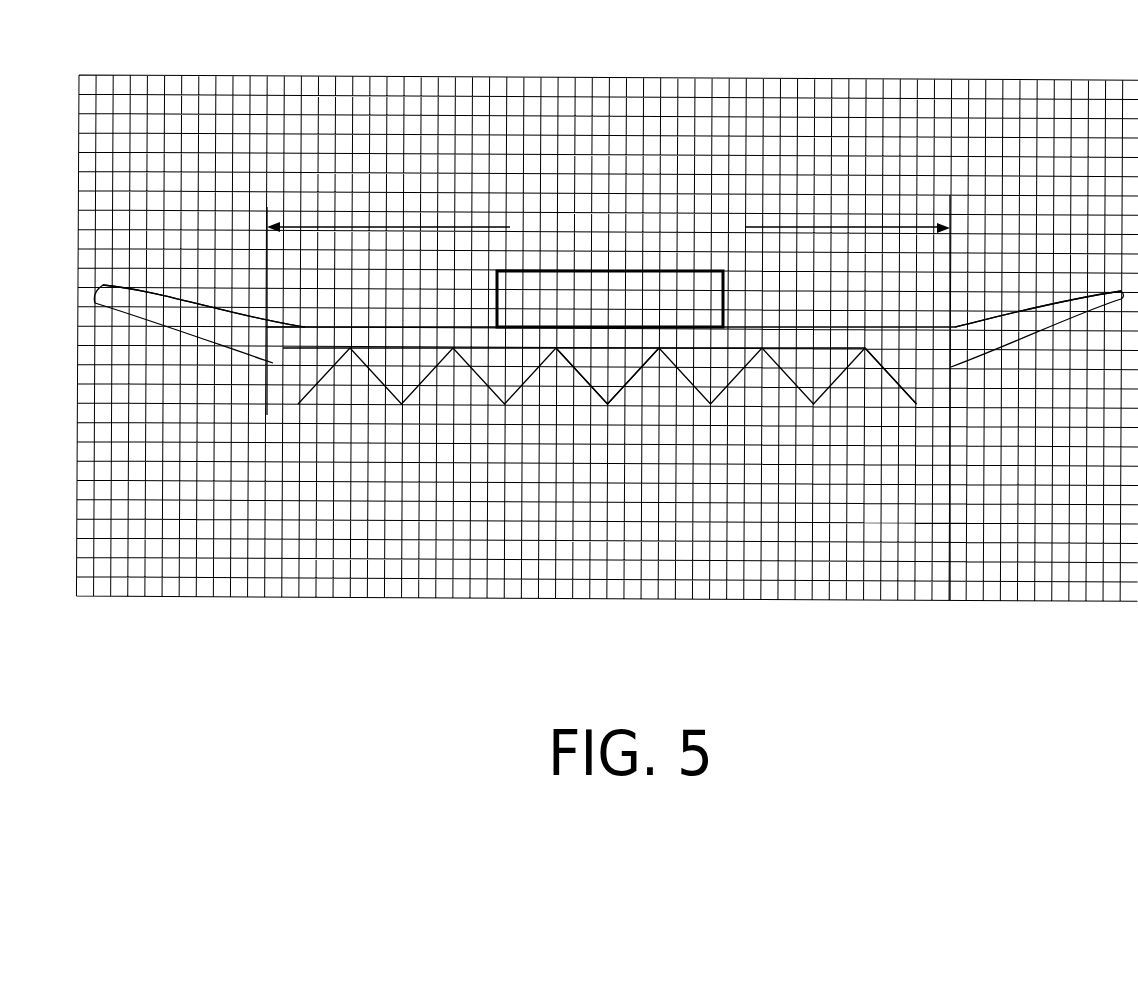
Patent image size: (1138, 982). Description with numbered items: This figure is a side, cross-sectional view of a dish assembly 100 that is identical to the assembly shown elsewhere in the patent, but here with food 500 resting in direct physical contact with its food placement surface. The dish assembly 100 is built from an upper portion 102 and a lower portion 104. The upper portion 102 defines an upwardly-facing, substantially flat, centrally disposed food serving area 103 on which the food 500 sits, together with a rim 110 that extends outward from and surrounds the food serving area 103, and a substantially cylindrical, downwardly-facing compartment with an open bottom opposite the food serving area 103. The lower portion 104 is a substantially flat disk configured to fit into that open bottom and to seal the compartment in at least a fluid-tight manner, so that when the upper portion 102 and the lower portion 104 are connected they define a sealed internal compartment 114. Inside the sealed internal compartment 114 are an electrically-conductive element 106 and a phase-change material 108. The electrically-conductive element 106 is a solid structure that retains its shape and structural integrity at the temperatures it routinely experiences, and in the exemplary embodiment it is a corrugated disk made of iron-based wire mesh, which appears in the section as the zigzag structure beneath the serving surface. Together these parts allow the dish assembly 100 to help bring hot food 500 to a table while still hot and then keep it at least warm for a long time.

The dish assembly 100 is at (228, 150).
The upper portion 102 is at (205, 270).
The food serving area 103 is at (608, 397).
The lower portion 104 is at (378, 407).
The electrically-conductive element 106 is at (773, 387).
The phase-change material 108 is at (662, 382).
The rim 110 is at (998, 310).
The sealed internal compartment 114 is at (858, 388).
The food 500 is at (497, 272).